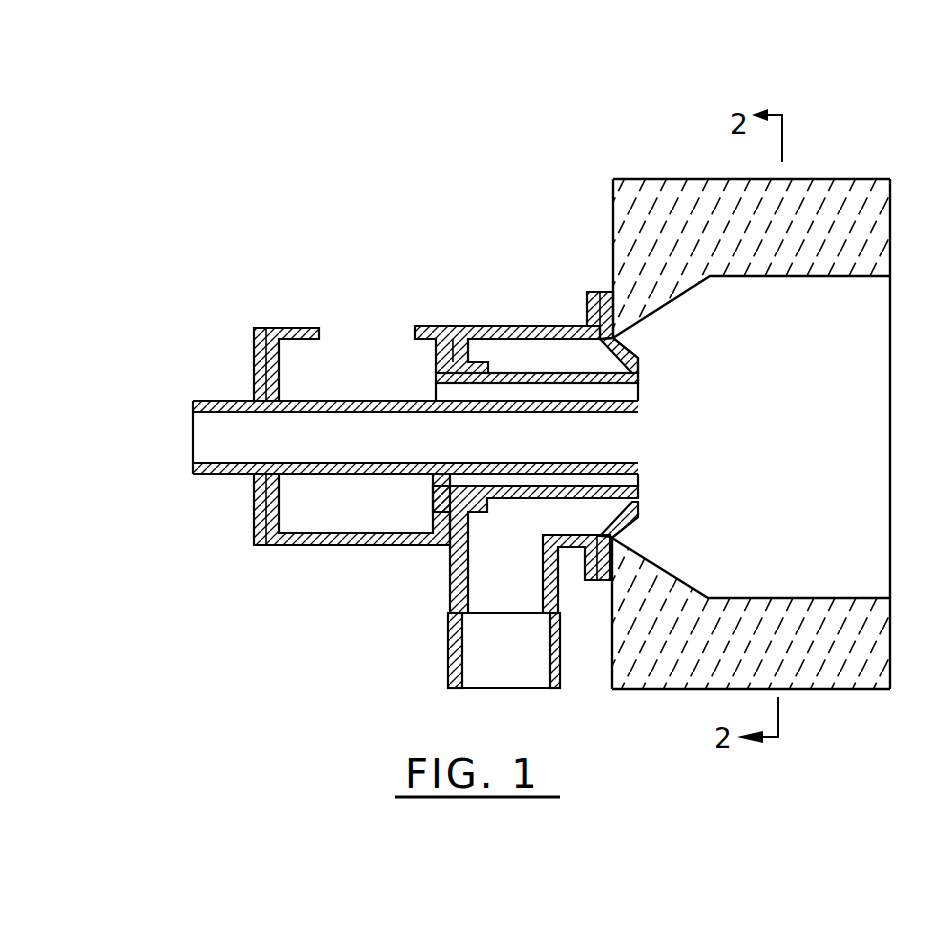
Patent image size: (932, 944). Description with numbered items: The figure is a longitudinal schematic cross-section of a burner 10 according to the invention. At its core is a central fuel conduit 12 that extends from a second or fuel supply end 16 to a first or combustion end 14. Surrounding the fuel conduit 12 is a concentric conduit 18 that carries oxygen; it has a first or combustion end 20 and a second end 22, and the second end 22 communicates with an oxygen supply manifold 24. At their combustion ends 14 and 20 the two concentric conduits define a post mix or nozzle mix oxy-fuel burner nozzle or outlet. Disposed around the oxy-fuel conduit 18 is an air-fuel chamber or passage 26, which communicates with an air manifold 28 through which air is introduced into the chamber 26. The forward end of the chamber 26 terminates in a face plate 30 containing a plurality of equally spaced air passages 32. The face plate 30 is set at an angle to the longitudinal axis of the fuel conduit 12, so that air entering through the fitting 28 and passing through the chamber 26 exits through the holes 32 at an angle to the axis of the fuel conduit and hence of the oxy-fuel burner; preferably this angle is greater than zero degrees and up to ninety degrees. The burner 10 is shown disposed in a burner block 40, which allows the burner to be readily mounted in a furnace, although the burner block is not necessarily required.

The burner 10 is at (483, 311).
The central fuel conduit 12 is at (220, 477).
The first or combustion end 14 is at (639, 481).
The second or fuel supply end 16 is at (195, 401).
The concentric conduit 18 is at (521, 372).
The first or combustion end 20 is at (640, 393).
The second end 22 is at (436, 378).
The oxygen supply manifold 24 is at (426, 326).
The air-fuel chamber or passage 26 is at (554, 324).
The air manifold 28 is at (561, 650).
The face plate 30 is at (641, 356).
The air passages 32 is at (623, 340).
The burner block 40 is at (863, 179).